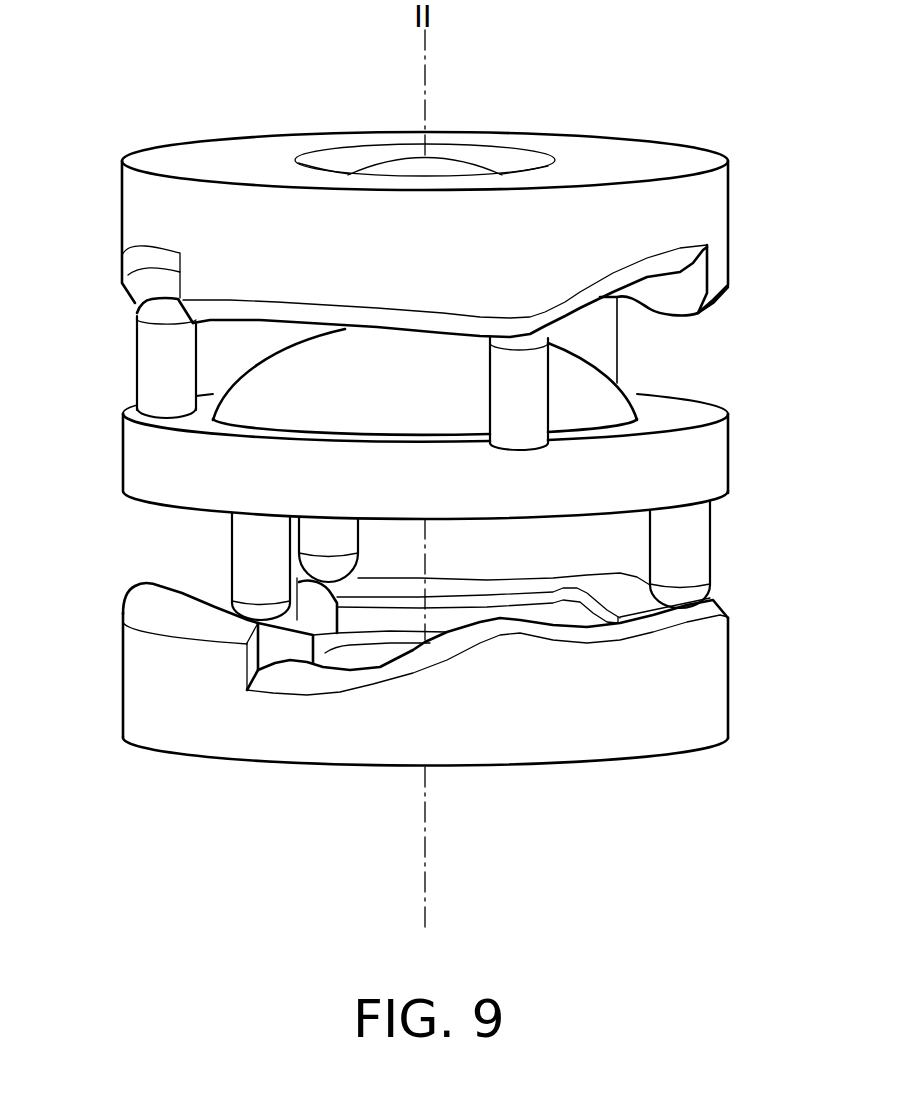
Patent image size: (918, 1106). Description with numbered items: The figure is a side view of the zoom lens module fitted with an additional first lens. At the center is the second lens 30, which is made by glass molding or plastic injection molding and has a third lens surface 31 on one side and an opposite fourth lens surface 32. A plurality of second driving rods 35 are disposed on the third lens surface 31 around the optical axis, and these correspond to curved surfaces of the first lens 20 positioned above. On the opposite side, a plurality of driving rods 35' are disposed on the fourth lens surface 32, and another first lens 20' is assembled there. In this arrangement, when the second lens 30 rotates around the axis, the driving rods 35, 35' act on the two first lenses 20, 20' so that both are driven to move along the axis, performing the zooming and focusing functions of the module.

The first lens 20 is at (437, 196).
The another first lens 20' is at (425, 734).
The second lens 30 is at (496, 413).
The third lens surface 31 is at (690, 410).
The fourth lens surface 32 is at (726, 494).
The second driving rod 35 is at (290, 383).
The driving rod 35' is at (467, 560).